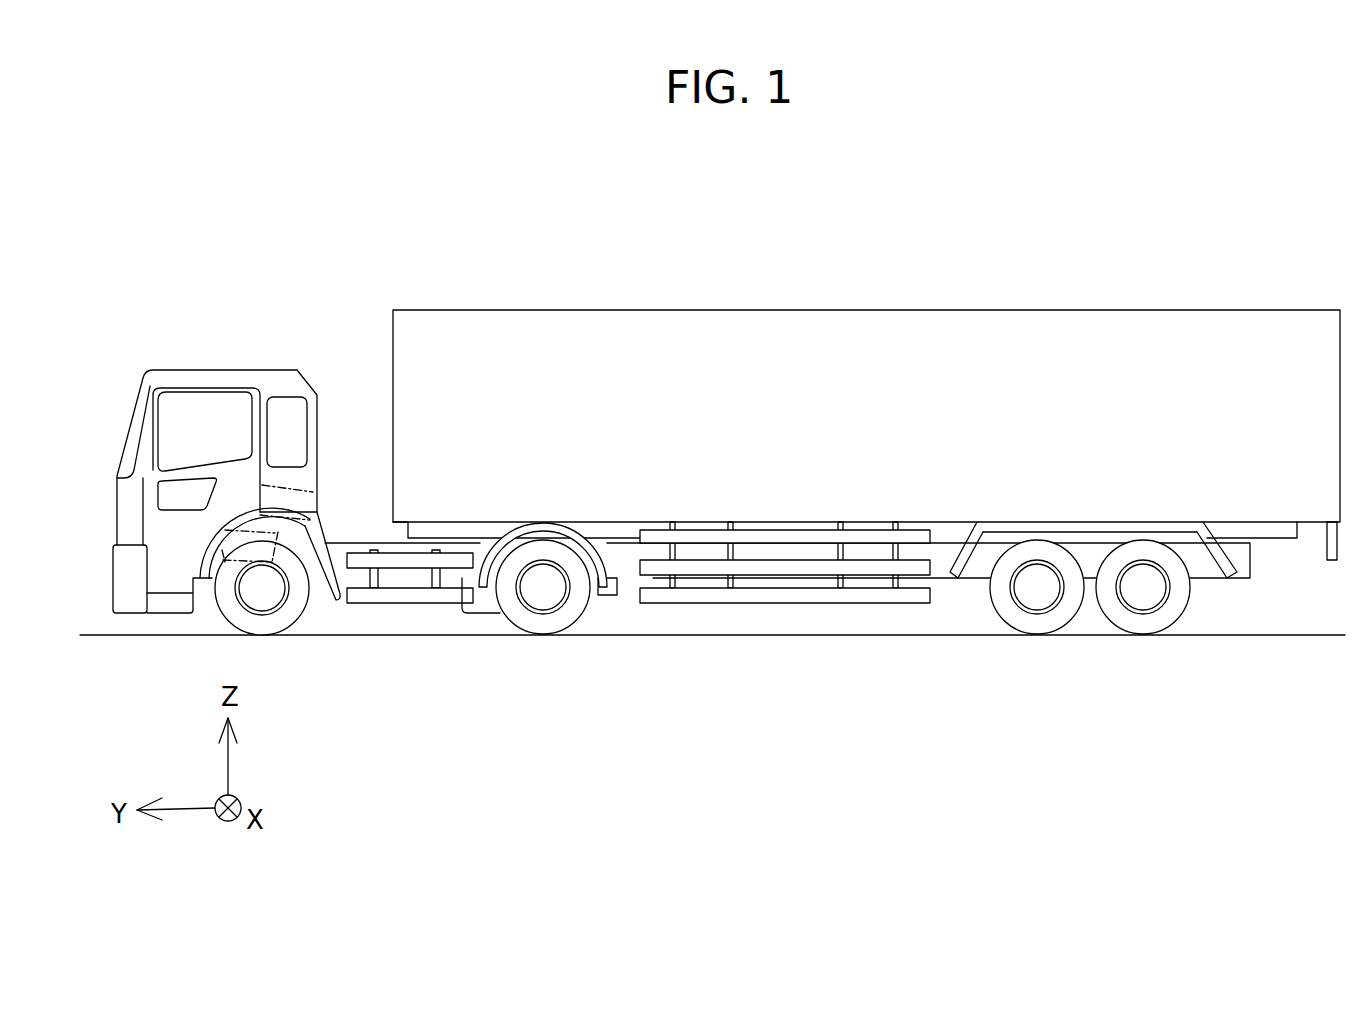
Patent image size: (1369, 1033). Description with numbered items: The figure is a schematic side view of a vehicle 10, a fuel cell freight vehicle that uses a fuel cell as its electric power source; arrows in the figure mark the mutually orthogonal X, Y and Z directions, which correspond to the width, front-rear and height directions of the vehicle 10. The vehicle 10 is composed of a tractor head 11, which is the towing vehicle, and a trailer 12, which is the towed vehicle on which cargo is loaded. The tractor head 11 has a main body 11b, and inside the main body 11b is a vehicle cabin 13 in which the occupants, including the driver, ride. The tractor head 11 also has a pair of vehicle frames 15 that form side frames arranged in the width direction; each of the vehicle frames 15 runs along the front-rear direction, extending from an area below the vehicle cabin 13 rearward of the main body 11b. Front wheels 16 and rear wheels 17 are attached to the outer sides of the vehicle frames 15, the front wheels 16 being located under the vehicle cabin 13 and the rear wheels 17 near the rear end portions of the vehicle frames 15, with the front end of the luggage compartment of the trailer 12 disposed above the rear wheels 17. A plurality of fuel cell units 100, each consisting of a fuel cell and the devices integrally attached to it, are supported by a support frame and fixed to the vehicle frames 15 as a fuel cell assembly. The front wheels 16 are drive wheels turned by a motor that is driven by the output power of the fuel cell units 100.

The vehicle 10 is at (562, 203).
The tractor head 11 is at (248, 318).
The trailer 12 is at (568, 290).
The main body 11b is at (262, 370).
The vehicle cabin 13 is at (190, 428).
The vehicle frames 15 is at (348, 547).
The front wheels 16 is at (268, 623).
The rear wheels 17 is at (548, 624).
The fuel cell units 100 is at (287, 518).